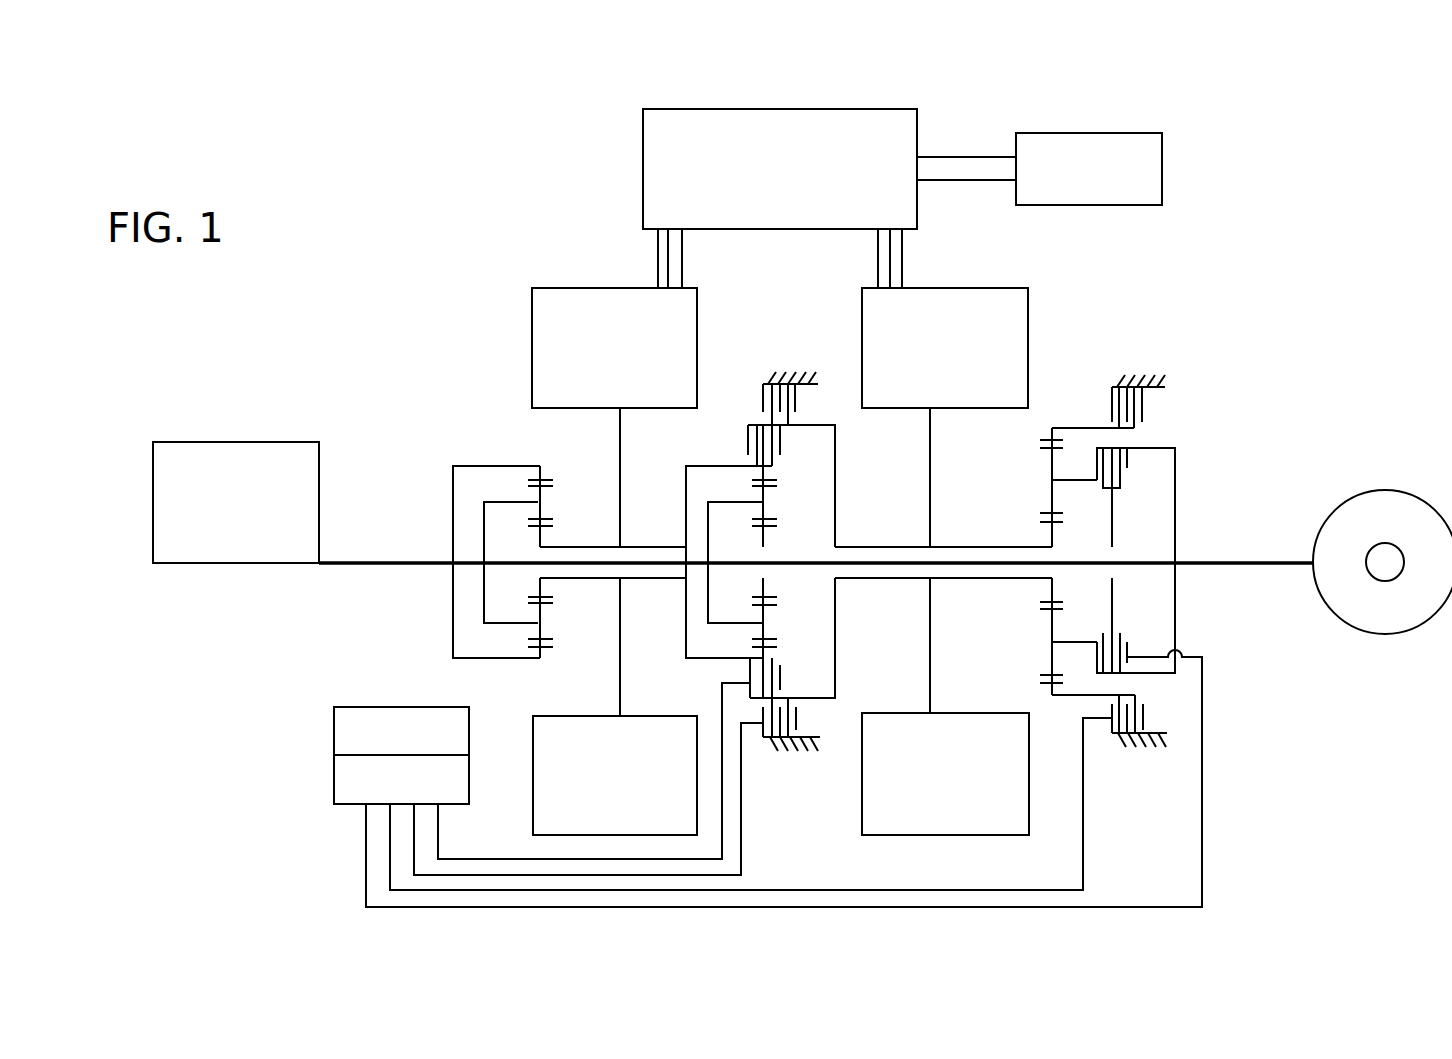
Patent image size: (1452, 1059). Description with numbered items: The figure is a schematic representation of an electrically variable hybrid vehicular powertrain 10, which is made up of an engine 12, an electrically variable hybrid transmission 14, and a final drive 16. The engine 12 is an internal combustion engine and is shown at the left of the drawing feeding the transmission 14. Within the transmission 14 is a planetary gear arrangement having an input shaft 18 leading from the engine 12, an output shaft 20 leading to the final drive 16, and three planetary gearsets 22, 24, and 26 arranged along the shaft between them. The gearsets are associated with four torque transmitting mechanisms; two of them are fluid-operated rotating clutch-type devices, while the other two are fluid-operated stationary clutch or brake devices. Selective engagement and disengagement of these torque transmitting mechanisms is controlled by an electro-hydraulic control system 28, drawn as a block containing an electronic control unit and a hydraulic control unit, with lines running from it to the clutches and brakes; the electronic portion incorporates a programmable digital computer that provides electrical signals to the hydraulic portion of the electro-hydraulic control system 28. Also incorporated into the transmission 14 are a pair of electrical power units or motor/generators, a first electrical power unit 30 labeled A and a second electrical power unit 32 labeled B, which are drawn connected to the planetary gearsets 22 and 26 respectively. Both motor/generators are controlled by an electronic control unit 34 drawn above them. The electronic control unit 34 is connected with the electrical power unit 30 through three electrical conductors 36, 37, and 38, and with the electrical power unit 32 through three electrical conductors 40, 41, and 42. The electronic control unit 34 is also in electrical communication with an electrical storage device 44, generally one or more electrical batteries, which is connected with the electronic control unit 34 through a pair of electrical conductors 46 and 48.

The powertrain 10 is at (541, 118).
The engine 12 is at (240, 442).
The electrically variable hybrid transmission 14 is at (427, 203).
The final drive 16 is at (1382, 490).
The input shaft 18 is at (421, 566).
The output shaft 20 is at (1221, 566).
The planetary gearset 22 is at (491, 670).
The planetary gearset 24 is at (716, 668).
The planetary gearset 26 is at (1046, 686).
The electro-hydraulic control system 28 is at (316, 724).
The electrical power unit or motor/generator A 30 is at (532, 323).
The electrical power unit or motor/generator B 32 is at (1029, 345).
The electronic control unit 34 is at (747, 108).
The electrical conductor 36 is at (657, 252).
The electrical conductor 37 is at (657, 275).
The electrical conductor 38 is at (683, 255).
The electrical conductor 40 is at (877, 255).
The electrical conductor 41 is at (903, 275).
The electrical conductor 42 is at (903, 252).
The electrical storage device 44 is at (1162, 172).
The electrical conductor 46 is at (962, 157).
The electrical conductor 48 is at (1003, 180).